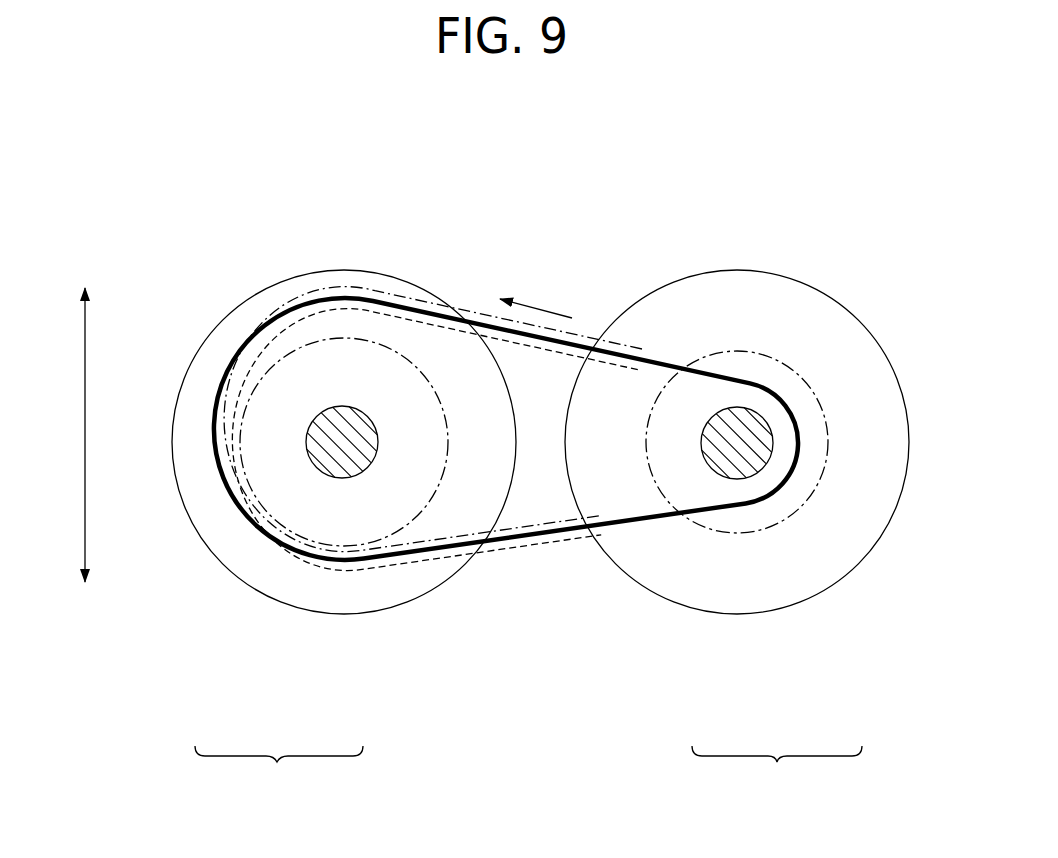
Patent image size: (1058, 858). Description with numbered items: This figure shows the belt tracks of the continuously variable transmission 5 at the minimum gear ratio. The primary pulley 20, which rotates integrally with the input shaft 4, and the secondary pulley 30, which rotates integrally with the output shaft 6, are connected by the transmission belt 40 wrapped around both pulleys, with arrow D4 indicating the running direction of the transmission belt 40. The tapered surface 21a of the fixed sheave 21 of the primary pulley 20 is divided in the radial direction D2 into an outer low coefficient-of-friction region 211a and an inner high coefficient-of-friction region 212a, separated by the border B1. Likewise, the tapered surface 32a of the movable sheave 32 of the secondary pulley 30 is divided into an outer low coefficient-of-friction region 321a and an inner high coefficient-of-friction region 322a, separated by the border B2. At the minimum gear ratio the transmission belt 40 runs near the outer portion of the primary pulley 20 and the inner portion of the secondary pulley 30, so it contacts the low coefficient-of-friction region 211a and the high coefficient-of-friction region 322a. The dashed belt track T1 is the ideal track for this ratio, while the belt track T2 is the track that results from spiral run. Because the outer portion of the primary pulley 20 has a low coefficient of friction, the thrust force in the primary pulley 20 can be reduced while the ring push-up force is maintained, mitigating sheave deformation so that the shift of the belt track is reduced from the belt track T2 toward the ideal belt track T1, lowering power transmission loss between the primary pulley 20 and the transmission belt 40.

The continuously variable transmission 5 is at (620, 225).
The primary pulley 20 is at (236, 305).
The fixed sheave 21 is at (203, 543).
The tapered surface 21a is at (279, 659).
The low coefficient-of-friction region 211a is at (250, 570).
The high coefficient-of-friction region 212a is at (332, 522).
The output shaft 6 is at (306, 437).
The secondary pulley 30 is at (862, 286).
The movable sheave 32 is at (898, 510).
The tapered surface 32a is at (777, 661).
The low coefficient-of-friction region 321a is at (812, 563).
The high coefficient-of-friction region 322a is at (740, 525).
The input shaft 4 is at (772, 430).
The transmission belt 40 is at (353, 295).
The border B1 is at (443, 407).
The border B2 is at (648, 458).
The belt track T1 is at (381, 571).
The belt track T2 is at (304, 292).
The radial direction D2 is at (65, 435).
The running direction D4 is at (536, 298).